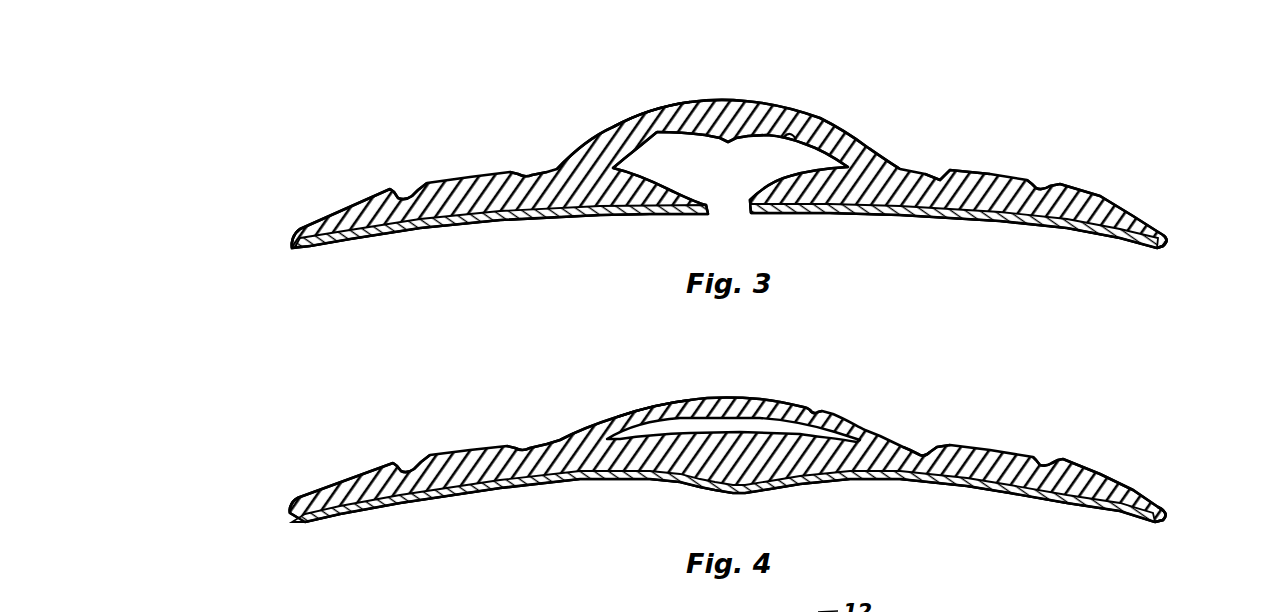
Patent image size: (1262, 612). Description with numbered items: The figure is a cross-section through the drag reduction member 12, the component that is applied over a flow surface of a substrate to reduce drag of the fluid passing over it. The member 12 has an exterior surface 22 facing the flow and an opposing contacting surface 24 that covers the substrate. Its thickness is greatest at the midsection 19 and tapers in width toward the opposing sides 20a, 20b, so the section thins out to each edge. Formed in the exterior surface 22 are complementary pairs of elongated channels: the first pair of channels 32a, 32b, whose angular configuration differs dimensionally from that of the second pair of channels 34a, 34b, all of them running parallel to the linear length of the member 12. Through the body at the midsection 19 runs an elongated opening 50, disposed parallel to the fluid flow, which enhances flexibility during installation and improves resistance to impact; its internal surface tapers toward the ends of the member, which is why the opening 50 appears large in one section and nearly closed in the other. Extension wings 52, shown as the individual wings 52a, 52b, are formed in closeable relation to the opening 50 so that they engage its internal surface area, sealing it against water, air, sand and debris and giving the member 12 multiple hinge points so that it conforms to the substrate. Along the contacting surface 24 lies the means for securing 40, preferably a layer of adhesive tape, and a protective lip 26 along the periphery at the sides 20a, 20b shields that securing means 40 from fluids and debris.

In FIG. 3, the drag reduction member 12 is at (611, 88).
In FIG. 4, the drag reduction member 12 is at (833, 361).
In FIG. 3, the midsection 19 is at (703, 100).
In FIG. 4, the midsection 19 is at (733, 398).
In FIG. 3, the opposing side 20a is at (1167, 237).
In FIG. 4, the opposing side 20a is at (1165, 512).
In FIG. 3, the opposing side 20b is at (293, 233).
In FIG. 4, the opposing side 20b is at (290, 504).
In FIG. 3, the exterior surface 22 is at (866, 142).
In FIG. 4, the exterior surface 22 is at (612, 432).
In FIG. 3, the contacting surface 24 is at (1087, 236).
In FIG. 4, the contacting surface 24 is at (373, 510).
In FIG. 3, the protective lip 26 is at (295, 249).
In FIG. 4, the protective lip 26 is at (294, 522).
In FIG. 3, the first elongated channel 32a is at (1040, 188).
In FIG. 4, the first elongated channel 32a is at (1040, 464).
In FIG. 3, the first elongated channel 32b is at (405, 196).
In FIG. 4, the first elongated channel 32b is at (405, 470).
In FIG. 3, the second elongated channel 34a is at (942, 177).
In FIG. 4, the second elongated channel 34a is at (922, 454).
In FIG. 3, the second elongated channel 34b is at (524, 176).
In FIG. 4, the second elongated channel 34b is at (523, 449).
In FIG. 3, the means for securing 40 is at (976, 224).
In FIG. 4, the means for securing 40 is at (443, 497).
In FIG. 3, the elongated opening 50 is at (790, 132).
In FIG. 4, the elongated opening 50 is at (808, 412).
In FIG. 4, the cavity 52 is at (733, 430).
In FIG. 3, the extension wing 52a is at (787, 178).
In FIG. 3, the extension wing 52b is at (657, 172).